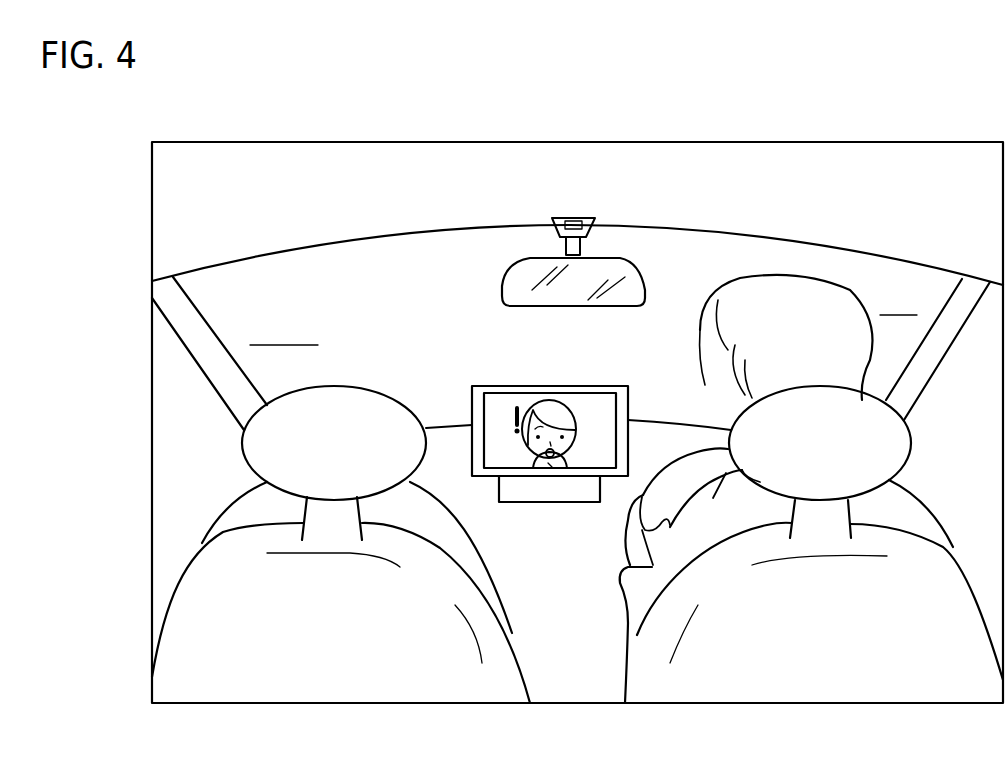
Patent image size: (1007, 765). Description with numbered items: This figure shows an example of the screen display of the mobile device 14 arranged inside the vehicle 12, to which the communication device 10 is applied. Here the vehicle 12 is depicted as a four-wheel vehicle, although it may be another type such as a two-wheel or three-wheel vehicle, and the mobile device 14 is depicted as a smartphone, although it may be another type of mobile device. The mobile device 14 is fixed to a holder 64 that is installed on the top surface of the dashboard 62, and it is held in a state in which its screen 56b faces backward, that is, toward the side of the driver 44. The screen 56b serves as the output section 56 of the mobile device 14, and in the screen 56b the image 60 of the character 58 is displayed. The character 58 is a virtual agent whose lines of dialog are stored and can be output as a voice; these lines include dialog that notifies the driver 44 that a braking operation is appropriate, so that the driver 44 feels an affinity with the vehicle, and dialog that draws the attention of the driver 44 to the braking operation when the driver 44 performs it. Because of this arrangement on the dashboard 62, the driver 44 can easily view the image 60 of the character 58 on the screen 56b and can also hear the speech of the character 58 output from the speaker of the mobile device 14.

The vehicle 12 is at (398, 201).
The driver 44 is at (795, 293).
The dashboard 62 is at (437, 427).
The communication device 10 is at (538, 457).
The mobile device 14 is at (538, 457).
The output section 56 is at (565, 414).
The screen 56b is at (590, 407).
The character 58 is at (546, 496).
The image 60 is at (550, 467).
The holder 64 is at (585, 495).